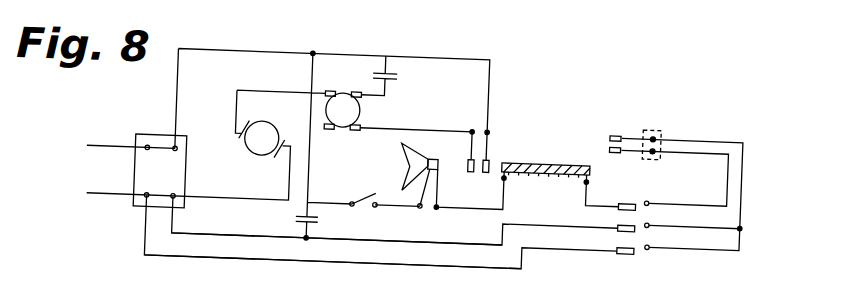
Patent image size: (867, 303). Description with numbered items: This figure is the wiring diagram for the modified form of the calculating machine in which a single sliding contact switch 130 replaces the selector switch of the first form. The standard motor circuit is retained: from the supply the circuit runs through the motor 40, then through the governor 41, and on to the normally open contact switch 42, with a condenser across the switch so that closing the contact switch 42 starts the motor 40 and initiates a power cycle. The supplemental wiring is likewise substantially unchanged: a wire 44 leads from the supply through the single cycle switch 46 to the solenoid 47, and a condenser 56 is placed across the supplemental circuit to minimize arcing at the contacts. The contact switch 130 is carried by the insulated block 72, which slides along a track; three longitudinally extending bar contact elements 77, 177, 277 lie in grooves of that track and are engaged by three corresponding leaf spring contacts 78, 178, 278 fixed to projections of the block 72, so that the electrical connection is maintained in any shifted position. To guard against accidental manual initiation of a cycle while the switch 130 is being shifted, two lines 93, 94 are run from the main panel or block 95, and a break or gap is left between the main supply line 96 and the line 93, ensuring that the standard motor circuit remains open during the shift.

The motor 40 is at (273, 130).
The governor 41 is at (338, 118).
The contact switch 42 is at (484, 176).
The wire 44 is at (402, 78).
The single cycle switch 46 is at (417, 184).
The solenoid 47 is at (555, 184).
The condenser 56 is at (322, 218).
The insulated block 72 is at (655, 130).
The bar contact element 77 is at (622, 212).
The leaf spring contact 78 is at (634, 204).
The line 93 is at (385, 242).
The line 94 is at (382, 268).
The main panel or block 95 is at (147, 171).
The main supply line 96 is at (107, 195).
The contact switch 130 is at (604, 135).
The bar contact element 177 is at (618, 233).
The leaf spring contact 178 is at (637, 223).
The bar contact element 277 is at (617, 258).
The leaf spring contact 278 is at (637, 247).